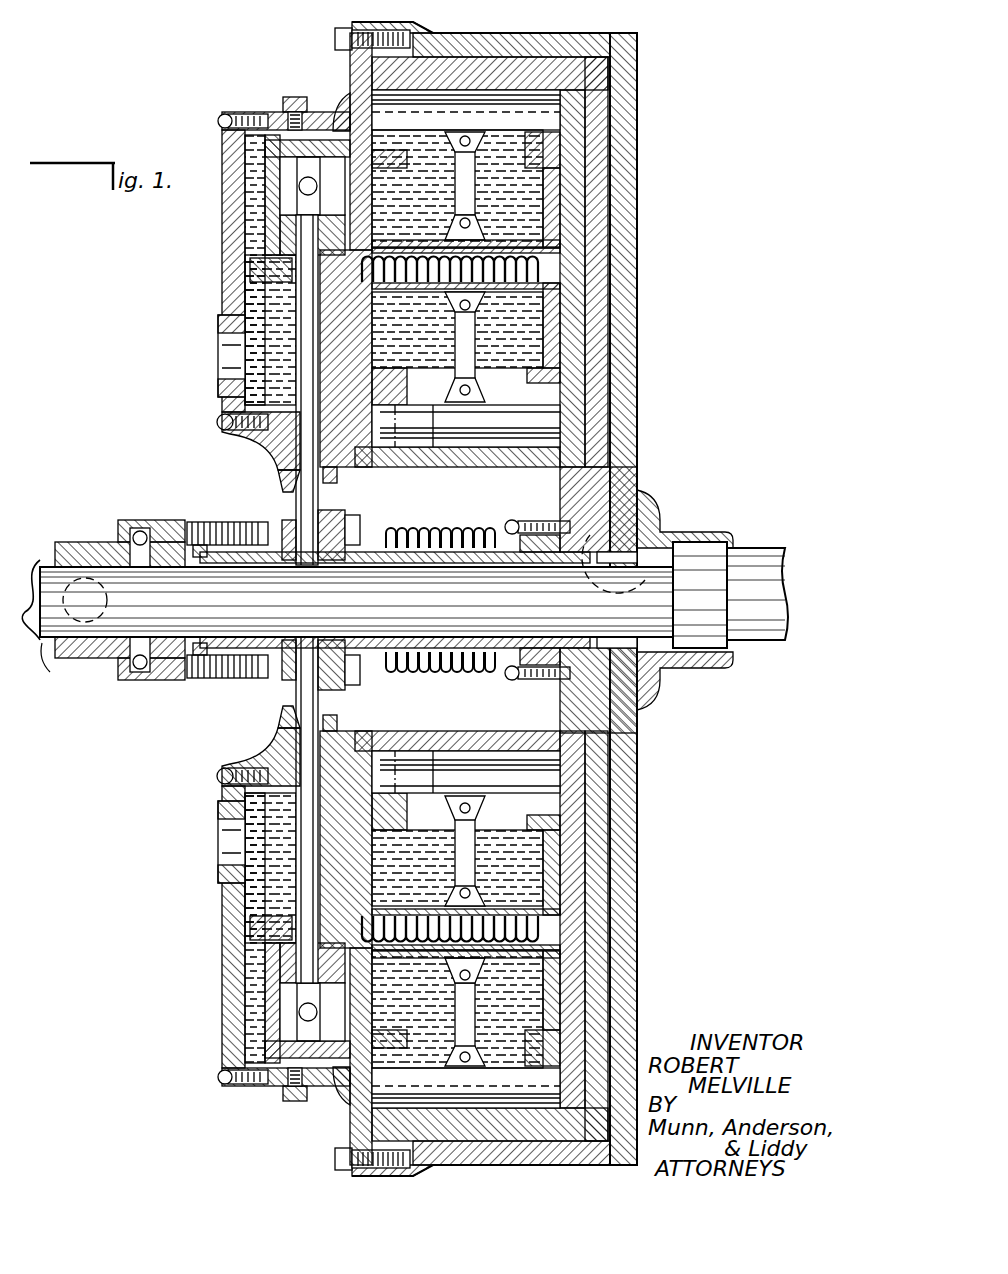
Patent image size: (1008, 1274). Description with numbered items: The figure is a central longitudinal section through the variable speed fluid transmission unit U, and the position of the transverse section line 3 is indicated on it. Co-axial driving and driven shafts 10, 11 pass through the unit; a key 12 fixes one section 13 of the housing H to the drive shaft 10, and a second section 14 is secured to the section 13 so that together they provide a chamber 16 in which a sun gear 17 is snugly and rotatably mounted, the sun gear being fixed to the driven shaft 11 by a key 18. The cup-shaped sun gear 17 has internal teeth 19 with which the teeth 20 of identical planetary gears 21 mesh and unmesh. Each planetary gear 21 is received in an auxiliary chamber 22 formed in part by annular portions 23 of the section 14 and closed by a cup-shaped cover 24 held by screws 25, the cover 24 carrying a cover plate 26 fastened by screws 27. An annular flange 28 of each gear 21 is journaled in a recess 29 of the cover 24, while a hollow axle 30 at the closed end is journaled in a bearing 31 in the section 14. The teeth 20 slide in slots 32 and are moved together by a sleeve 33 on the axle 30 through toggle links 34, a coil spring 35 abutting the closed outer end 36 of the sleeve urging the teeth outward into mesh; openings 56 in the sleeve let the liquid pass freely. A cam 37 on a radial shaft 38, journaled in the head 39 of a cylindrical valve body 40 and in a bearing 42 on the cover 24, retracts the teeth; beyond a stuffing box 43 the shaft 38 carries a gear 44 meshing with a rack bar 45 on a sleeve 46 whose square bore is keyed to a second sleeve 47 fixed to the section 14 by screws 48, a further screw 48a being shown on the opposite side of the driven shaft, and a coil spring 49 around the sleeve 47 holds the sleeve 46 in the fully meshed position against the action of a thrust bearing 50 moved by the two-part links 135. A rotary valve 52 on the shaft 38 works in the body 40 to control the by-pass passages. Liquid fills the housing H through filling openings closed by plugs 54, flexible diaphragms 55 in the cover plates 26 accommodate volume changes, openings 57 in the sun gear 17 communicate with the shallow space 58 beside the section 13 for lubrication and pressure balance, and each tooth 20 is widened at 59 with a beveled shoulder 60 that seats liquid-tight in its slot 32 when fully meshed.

The driving shaft 10 is at (756, 552).
The driven shaft 11 is at (50, 660).
The key 12 is at (696, 548).
The housing section 13 is at (625, 445).
The housing section 14 is at (568, 316).
The chamber 16 is at (600, 935).
The sun gear 17 is at (608, 378).
The key 18 is at (634, 506).
The internal teeth 19 is at (600, 68).
The teeth 20 is at (560, 125).
The planetary gears 21 is at (590, 226).
The auxiliary chambers 22 is at (560, 216).
The annular portions 23 is at (540, 468).
The covers 24 is at (250, 113).
The screws 25 is at (336, 42).
The cover plates 26 is at (232, 232).
The screws 27 is at (222, 120).
The annular flanges 28 is at (356, 108).
The recesses 29 is at (350, 118).
The hollow axles 30 is at (530, 262).
The bearings 31 is at (565, 288).
The slots 32 is at (560, 398).
The sleeve 33 is at (560, 330).
The toggle links 34 is at (560, 172).
The coil spring 35 is at (560, 258).
The closed outer end 36 is at (297, 307).
The cam 37 is at (258, 275).
The shaft 38 is at (297, 383).
The head 39 is at (262, 270).
The valve body 40 is at (268, 200).
The bearing 42 is at (282, 450).
The stuffing box 43 is at (283, 478).
The gear 44 is at (285, 518).
The rack bar 45 is at (216, 521).
The sleeve 46 is at (252, 670).
The second sleeve 47 is at (462, 548).
The screws 48 is at (522, 500).
The bolt 48a is at (512, 670).
The coil spring 49 is at (432, 668).
The thrust bearing 50 is at (142, 690).
The rotary valve 52 is at (248, 166).
The plugs 54 is at (287, 98).
The diaphragms 55 is at (240, 350).
The openings 56 is at (388, 246).
The openings 57 is at (597, 98).
The space 58 is at (600, 195).
The widened portion 59 is at (478, 440).
The beveled shoulder 60 is at (505, 445).
The two-part links 135 is at (25, 560).
The section line 3 is at (433, 5).
The housing H is at (622, 170).
The transmission unit U is at (622, 818).